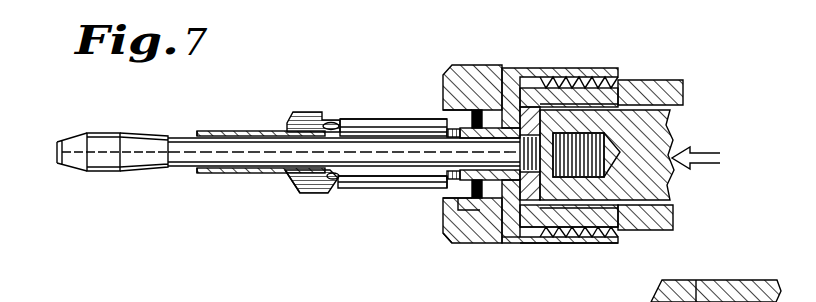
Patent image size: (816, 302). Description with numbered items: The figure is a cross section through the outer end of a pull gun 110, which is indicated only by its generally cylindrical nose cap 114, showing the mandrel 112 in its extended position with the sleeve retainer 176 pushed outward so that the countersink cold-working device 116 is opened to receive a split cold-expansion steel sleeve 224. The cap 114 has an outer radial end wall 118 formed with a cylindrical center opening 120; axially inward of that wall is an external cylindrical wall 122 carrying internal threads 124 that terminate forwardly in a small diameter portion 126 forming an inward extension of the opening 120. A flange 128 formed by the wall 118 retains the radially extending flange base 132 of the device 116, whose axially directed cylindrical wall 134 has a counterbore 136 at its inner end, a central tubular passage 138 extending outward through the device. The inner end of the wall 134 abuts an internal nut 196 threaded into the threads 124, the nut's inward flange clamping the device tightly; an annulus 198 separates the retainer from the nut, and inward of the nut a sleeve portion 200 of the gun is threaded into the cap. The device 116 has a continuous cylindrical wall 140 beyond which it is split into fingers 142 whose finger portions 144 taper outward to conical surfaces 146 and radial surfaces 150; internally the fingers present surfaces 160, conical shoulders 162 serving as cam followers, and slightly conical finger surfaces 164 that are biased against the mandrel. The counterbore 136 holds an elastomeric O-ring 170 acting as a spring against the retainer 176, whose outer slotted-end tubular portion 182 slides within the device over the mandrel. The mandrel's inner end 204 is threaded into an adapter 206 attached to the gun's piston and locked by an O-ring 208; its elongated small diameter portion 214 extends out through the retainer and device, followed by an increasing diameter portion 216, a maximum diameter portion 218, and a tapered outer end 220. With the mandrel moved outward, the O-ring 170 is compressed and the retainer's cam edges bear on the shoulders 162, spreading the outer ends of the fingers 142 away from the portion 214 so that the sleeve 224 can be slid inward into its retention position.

The pull gun 110 is at (542, 84).
The mandrel 112 is at (165, 172).
The nose cap 114 is at (505, 66).
The countersink cold-working device 116 is at (375, 118).
The outer radial end wall 118 is at (447, 226).
The cylindrical center opening 120 is at (444, 192).
The external cylindrical wall 122 is at (545, 232).
The internal threads 124 is at (561, 84).
The small diameter portion 126 is at (475, 222).
The flange 128 is at (458, 100).
The flange base 132 is at (452, 234).
The cylindrical wall 134 is at (470, 110).
The counterbore 136 is at (511, 88).
The central tubular passage 138 is at (330, 186).
The continuous cylindrical wall 140 is at (430, 120).
The fingers 142 is at (329, 110).
The finger portions 144 is at (382, 120).
The conical surfaces 146 is at (290, 188).
The radial surfaces 150 is at (273, 175).
The internal surfaces 160 is at (361, 178).
The conical shoulders 162 is at (336, 124).
The finger surfaces 164 is at (275, 131).
The O-ring 170 is at (487, 226).
The sleeve retainer 176 is at (351, 190).
The outer slotted-end tubular portion 182 is at (370, 121).
The internal nut 196 is at (560, 92).
The annulus 198 is at (515, 240).
The sleeve portion 200 is at (678, 90).
The inner end 204 is at (613, 152).
The adapter 206 is at (668, 188).
The O-ring 208 is at (562, 242).
The small diameter portion 214 is at (191, 147).
The increasing diameter portion 216 is at (140, 134).
The maximum diameter portion 218 is at (102, 134).
The tapered outer end 220 is at (77, 136).
The cold-expansion steel sleeve 224 is at (204, 176).